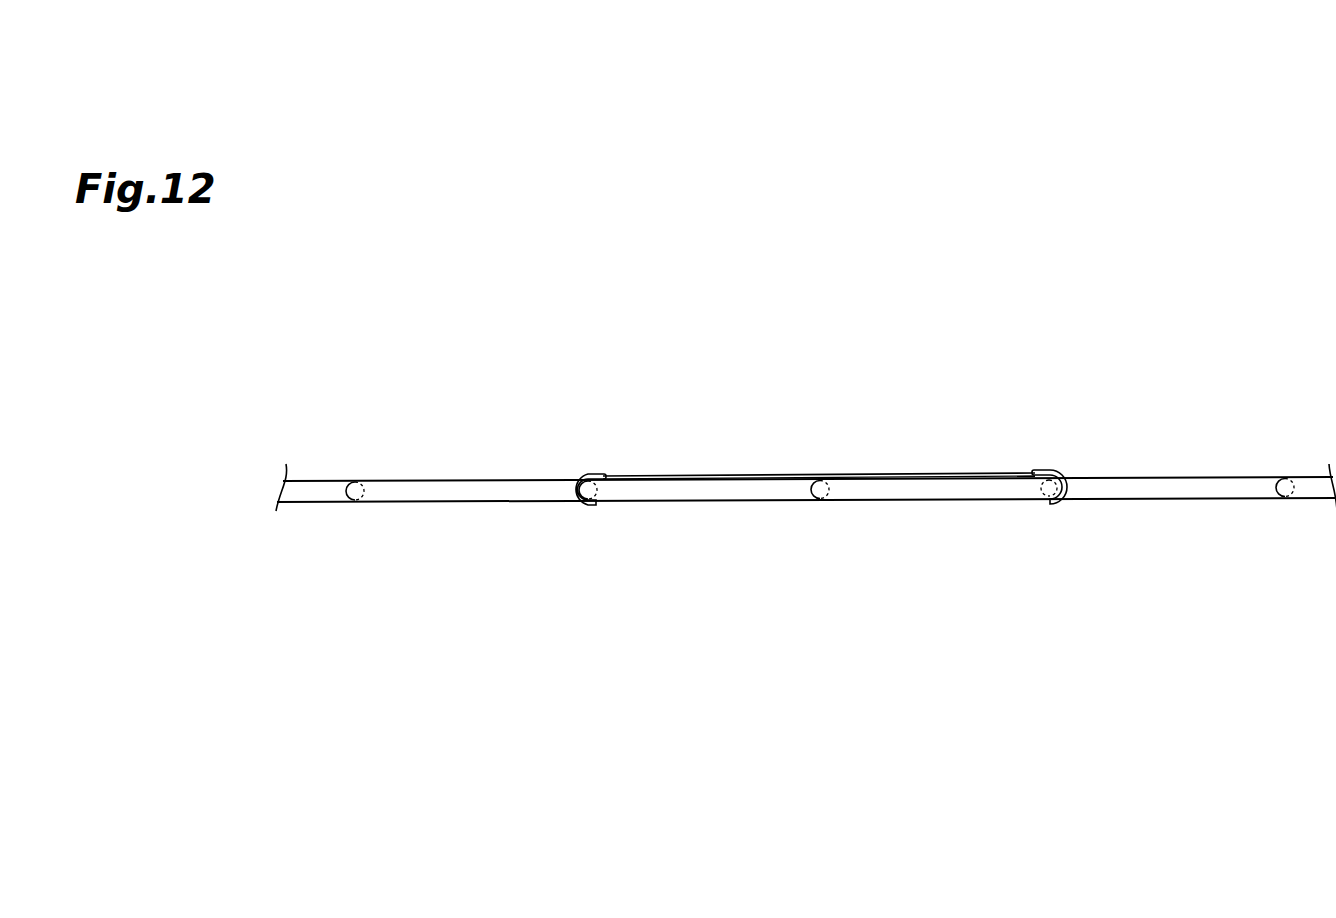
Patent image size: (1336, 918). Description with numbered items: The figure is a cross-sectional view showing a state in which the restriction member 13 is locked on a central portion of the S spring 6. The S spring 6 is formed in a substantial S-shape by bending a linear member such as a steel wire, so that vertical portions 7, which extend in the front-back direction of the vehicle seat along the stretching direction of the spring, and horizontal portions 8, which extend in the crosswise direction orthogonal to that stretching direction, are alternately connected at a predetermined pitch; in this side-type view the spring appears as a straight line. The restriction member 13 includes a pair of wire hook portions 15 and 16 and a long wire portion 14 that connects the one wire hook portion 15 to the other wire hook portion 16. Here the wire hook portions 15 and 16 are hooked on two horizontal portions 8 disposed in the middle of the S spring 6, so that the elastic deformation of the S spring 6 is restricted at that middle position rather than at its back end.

The S spring 6 is at (806, 474).
The vertical portion 7 is at (475, 492).
The horizontal portion 8 is at (355, 501).
The restriction member 13 is at (750, 468).
The long wire portion 14 is at (924, 475).
The wire hook portion 15 is at (1042, 469).
The wire hook portion 16 is at (585, 472).